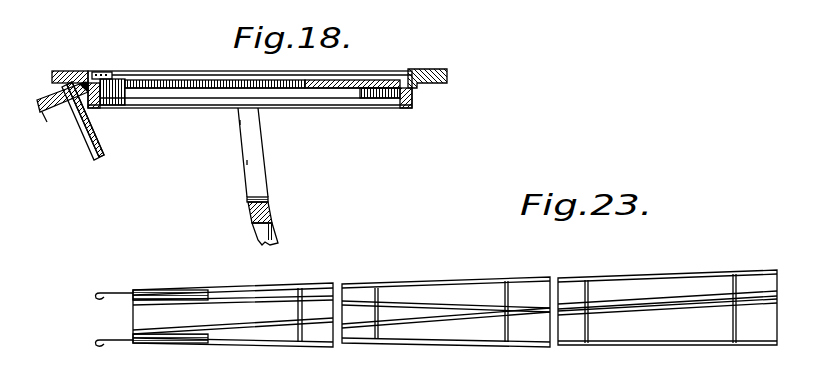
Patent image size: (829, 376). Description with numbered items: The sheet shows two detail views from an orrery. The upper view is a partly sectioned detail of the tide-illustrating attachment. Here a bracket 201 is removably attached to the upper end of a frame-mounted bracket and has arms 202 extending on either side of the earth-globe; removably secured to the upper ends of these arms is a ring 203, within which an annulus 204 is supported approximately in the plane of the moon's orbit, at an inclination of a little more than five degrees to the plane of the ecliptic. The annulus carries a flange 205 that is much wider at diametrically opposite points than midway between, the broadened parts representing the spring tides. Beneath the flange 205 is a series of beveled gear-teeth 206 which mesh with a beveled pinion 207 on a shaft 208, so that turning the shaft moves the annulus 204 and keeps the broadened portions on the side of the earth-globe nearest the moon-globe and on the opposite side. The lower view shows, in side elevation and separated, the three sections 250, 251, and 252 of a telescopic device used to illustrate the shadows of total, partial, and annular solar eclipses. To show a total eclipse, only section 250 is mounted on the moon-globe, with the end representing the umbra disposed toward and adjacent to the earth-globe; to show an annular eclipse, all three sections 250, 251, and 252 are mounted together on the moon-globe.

In FIG. 18, the bracket 201 is at (276, 230).
In FIG. 18, the arms 202 is at (258, 144).
In FIG. 18, the ring 203 is at (404, 100).
In FIG. 18, the annulus 204 is at (372, 102).
In FIG. 18, the flange 205 is at (428, 69).
In FIG. 18, the beveled gear-teeth 206 is at (95, 72).
In FIG. 18, the beveled pinion 207 is at (44, 114).
In FIG. 18, the shaft 208 is at (92, 152).
In FIG. 23, the section of telescopic device 250 is at (163, 290).
In FIG. 23, the section of telescopic device 251 is at (424, 284).
In FIG. 23, the section of telescopic device 252 is at (658, 266).